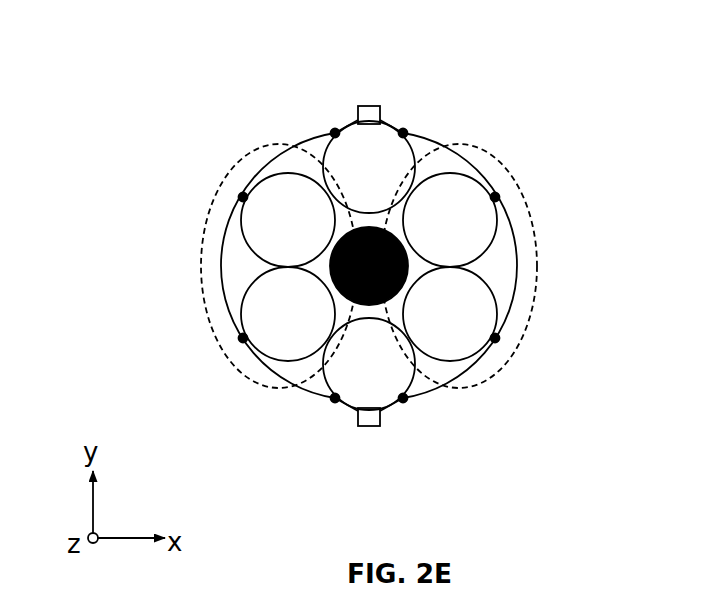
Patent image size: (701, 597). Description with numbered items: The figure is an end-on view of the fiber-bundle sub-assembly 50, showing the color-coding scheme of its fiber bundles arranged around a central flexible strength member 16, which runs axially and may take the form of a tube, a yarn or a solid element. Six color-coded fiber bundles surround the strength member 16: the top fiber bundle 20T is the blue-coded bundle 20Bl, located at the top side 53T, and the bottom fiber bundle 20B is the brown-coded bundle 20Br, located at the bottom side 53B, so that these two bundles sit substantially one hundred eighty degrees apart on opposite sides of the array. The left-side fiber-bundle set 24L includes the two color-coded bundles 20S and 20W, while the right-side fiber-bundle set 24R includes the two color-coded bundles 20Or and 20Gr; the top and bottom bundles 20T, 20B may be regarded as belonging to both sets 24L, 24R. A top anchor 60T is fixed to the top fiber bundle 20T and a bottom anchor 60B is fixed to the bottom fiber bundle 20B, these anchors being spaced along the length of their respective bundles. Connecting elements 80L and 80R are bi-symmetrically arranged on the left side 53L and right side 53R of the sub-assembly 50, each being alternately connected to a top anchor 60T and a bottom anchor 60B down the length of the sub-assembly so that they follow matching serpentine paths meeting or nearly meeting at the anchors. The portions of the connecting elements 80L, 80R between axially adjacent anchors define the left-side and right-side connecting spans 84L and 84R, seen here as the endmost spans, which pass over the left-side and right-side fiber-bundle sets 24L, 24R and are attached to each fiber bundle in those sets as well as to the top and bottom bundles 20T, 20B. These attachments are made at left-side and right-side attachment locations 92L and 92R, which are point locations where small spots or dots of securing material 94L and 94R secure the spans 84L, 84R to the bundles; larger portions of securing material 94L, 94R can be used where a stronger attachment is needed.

The fiber-bundle sub-assembly 50 is at (265, 86).
The central flexible strength member 16 is at (383, 278).
The color-coded fiber bundle 20W is at (313, 232).
The color-coded fiber bundle 20S is at (309, 326).
The color-coded fiber bundle 20Bl is at (392, 179).
The color-coded fiber bundle 20Br is at (393, 376).
The color-coded fiber bundle 20Or is at (476, 232).
The color-coded fiber bundle 20Gr is at (476, 326).
The top fiber bundle 20T is at (327, 138).
The bottom fiber bundle 20B is at (412, 393).
The left side 53L is at (158, 205).
The right side 53R is at (556, 202).
The top side 53T is at (453, 119).
The bottom side 53B is at (429, 437).
The top anchor 60T is at (369, 106).
The bottom anchor 60B is at (369, 427).
The left-side connecting element 80L is at (217, 262).
The right-side connecting element 80R is at (521, 281).
The left-side connecting span 84L is at (256, 175).
The right-side connecting span 84R is at (456, 145).
The left-side fiber-bundle set 24L is at (211, 336).
The right-side fiber-bundle set 24R is at (515, 348).
The left-side attachment location 92L is at (246, 352).
The right-side attachment location 92R is at (511, 206).
The securing material 94L is at (241, 340).
The securing material 94R is at (497, 199).